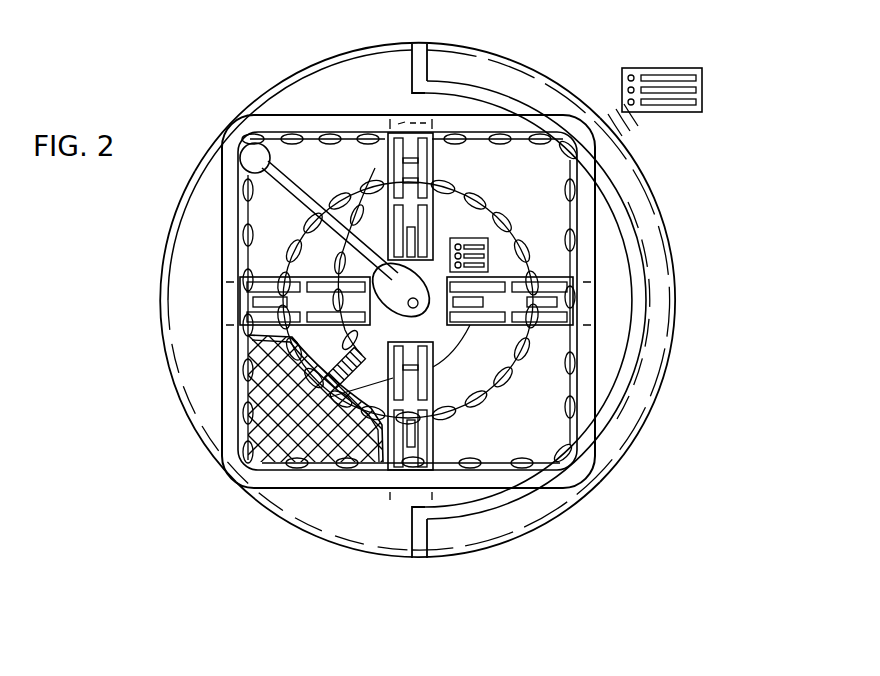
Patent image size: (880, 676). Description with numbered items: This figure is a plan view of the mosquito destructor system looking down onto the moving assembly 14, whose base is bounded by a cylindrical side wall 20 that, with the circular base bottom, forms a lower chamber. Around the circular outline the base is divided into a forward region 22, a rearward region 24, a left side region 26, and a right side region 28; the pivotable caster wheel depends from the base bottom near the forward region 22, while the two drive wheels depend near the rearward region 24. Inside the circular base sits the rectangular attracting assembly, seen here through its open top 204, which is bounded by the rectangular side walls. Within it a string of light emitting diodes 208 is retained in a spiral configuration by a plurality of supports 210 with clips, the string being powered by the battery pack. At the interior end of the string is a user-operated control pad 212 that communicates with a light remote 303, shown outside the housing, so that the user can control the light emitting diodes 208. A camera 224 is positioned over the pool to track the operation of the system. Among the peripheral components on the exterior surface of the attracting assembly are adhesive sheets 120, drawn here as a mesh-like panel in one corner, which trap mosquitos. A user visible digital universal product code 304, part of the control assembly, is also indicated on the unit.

The moving assembly 14 is at (210, 286).
The cylindrical side wall 20 is at (187, 430).
The forward region 22 is at (680, 311).
The rearward region 24 is at (158, 288).
The left side region 26 is at (358, 557).
The right side region 28 is at (307, 70).
The adhesive sheets 120 is at (383, 428).
The open top 204 is at (490, 425).
The string of light emitting diodes 208 is at (568, 181).
The supports 210 is at (395, 125).
The user-operated control pad 212 is at (462, 238).
The camera 224 is at (425, 310).
The light remote 303 is at (657, 67).
The user visible digital universal product code 304 is at (247, 347).